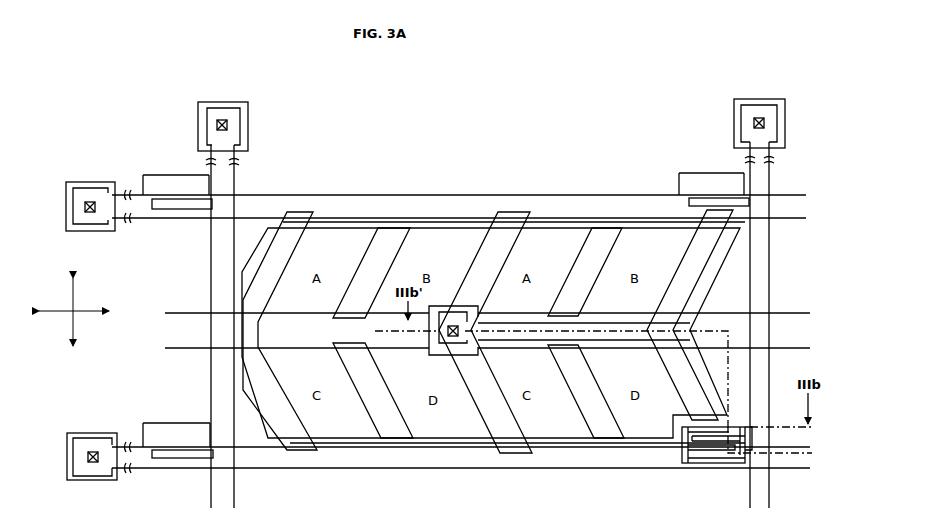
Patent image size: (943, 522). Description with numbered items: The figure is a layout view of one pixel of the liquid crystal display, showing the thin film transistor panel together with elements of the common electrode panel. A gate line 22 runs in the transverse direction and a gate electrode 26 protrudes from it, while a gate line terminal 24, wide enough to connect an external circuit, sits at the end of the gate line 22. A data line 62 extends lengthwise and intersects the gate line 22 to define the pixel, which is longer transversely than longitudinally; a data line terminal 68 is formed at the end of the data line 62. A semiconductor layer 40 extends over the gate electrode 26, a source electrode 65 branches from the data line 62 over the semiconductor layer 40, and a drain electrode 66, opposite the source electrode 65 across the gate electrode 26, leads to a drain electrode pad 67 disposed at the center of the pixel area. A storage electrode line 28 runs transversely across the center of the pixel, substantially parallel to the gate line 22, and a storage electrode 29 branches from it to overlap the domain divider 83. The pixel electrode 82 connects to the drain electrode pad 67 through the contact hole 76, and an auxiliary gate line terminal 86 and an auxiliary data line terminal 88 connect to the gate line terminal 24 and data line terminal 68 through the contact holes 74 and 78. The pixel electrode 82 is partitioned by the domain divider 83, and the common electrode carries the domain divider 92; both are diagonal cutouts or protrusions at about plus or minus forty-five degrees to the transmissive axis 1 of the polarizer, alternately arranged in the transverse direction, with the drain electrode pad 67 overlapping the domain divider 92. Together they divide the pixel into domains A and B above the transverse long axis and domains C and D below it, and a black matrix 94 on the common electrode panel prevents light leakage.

The transmissive axis 1 is at (66, 303).
The gate line 22 is at (447, 469).
The gate line terminal 24 is at (90, 436).
The gate electrode 26 is at (753, 425).
The storage electrode line 28 is at (188, 311).
The storage electrode 29 is at (395, 216).
The semiconductor layer 40 is at (684, 459).
The data line 62 is at (772, 251).
The source electrode 65 is at (728, 464).
The drain electrode 66 is at (702, 464).
The drain electrode pad 67 is at (480, 313).
The data line terminal 68 is at (769, 100).
The contact hole 74 is at (86, 457).
The contact hole 76 is at (452, 340).
The contact hole 78 is at (757, 117).
The pixel electrode 82 is at (262, 227).
The domain divider 83 is at (411, 247).
The auxiliary gate line terminal 86 is at (96, 481).
The auxiliary data line terminal 88 is at (733, 124).
The domain divider 92 is at (298, 211).
The black matrix 94 is at (340, 445).